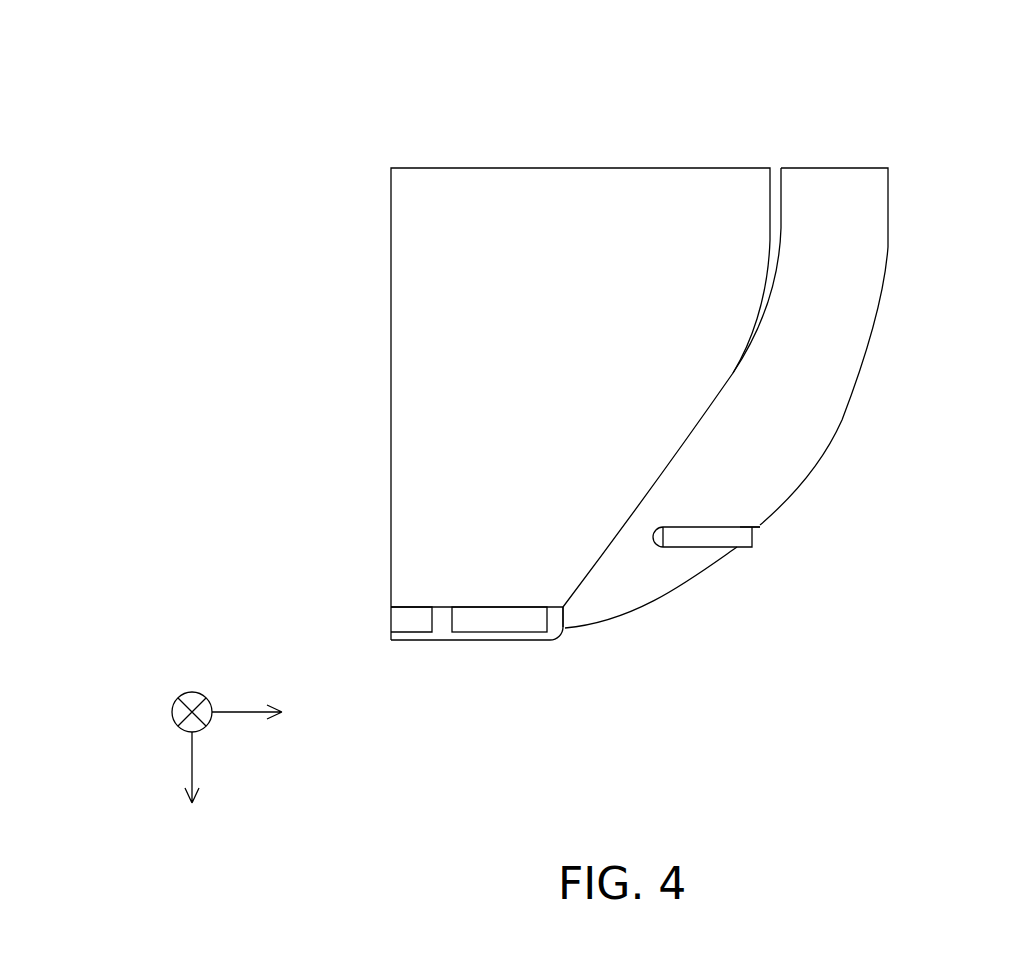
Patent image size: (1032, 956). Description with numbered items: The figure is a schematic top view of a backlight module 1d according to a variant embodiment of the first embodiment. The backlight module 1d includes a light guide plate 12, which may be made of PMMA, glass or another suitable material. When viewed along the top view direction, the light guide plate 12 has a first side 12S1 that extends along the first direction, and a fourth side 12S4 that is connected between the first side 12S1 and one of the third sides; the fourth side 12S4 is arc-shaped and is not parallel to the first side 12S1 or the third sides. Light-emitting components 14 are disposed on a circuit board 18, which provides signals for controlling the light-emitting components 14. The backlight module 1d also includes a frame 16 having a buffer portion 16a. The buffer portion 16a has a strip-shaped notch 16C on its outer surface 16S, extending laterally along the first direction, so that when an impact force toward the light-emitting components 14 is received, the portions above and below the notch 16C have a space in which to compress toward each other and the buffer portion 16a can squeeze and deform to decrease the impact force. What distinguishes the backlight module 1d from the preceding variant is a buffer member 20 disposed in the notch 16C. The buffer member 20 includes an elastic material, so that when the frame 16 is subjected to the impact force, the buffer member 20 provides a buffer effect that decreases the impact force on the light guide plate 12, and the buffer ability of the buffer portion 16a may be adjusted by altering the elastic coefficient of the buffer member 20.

The backlight module 1d is at (898, 118).
The light guide plate 12 is at (529, 463).
The first side 12S1 is at (443, 607).
The fourth side 12S4 is at (582, 584).
The light-emitting components 14 is at (492, 623).
The frame 16 is at (725, 440).
The buffer portion 16a is at (725, 440).
The outer surface 16S is at (697, 577).
The notch 16C is at (717, 527).
The circuit board 18 is at (443, 628).
The buffer member 20 is at (740, 537).